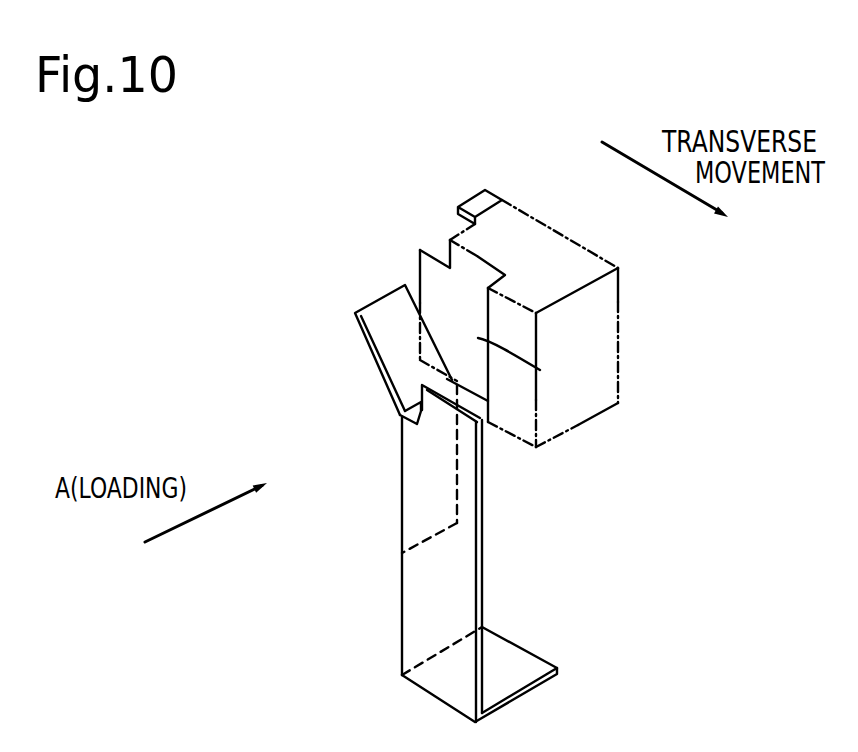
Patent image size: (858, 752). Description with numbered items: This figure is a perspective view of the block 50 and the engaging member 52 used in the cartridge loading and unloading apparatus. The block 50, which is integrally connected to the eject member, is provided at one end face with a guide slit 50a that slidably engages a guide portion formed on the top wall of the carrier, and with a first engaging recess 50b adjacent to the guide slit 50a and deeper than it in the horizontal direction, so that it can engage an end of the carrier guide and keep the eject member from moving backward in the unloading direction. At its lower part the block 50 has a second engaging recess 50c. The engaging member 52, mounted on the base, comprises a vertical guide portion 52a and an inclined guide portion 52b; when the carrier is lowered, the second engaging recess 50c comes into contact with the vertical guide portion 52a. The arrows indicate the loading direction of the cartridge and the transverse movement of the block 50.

The block 50 is at (618, 302).
The guide slit 50a is at (506, 197).
The first engaging recess 50b is at (438, 242).
The second engaging recess 50c is at (537, 363).
The engaging member 52 is at (484, 588).
The vertical guide portion 52a is at (482, 517).
The inclined guide portion 52b is at (388, 303).